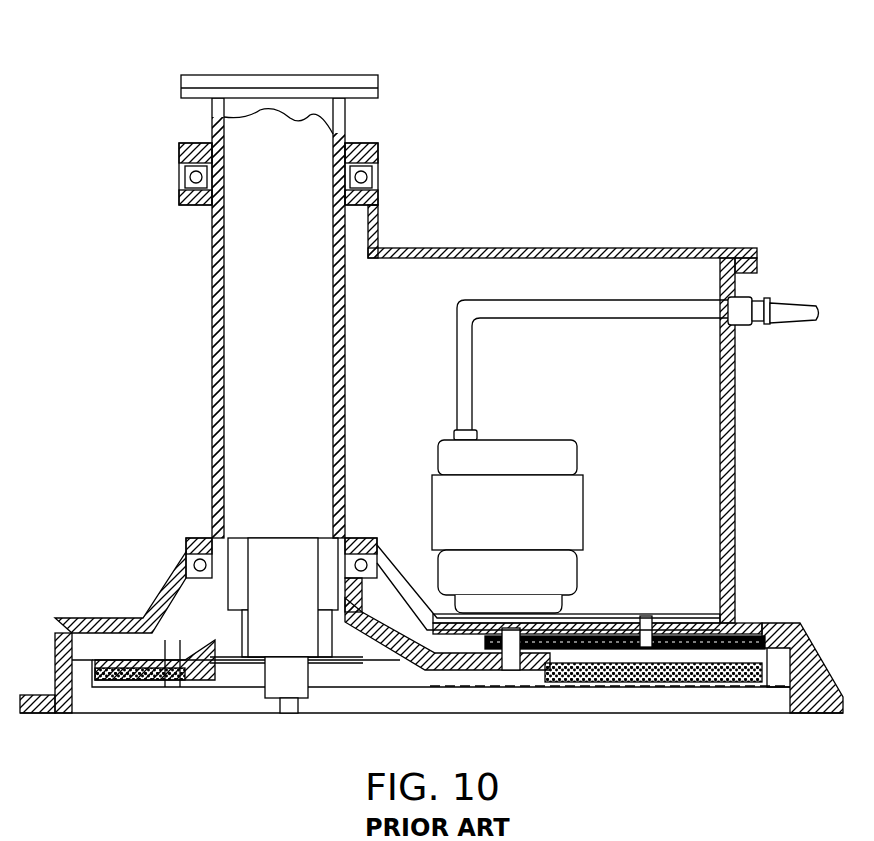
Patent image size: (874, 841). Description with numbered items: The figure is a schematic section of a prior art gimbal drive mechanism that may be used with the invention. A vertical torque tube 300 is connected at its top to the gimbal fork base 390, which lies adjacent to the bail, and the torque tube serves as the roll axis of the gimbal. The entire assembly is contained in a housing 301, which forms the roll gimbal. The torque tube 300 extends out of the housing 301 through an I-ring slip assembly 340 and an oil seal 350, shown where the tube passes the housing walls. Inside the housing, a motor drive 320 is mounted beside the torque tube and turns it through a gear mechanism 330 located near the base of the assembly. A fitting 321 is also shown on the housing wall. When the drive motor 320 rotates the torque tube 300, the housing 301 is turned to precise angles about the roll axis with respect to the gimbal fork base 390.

The torque tube 300 is at (226, 316).
The housing 301 is at (381, 218).
The motor drive 320 is at (515, 438).
The pipe fitting 321 is at (796, 302).
The gear mechanism 330 is at (200, 652).
The I-ring slip assembly 340 is at (305, 355).
The oil seal 350 is at (378, 189).
The gimbal fork base 390 is at (275, 75).